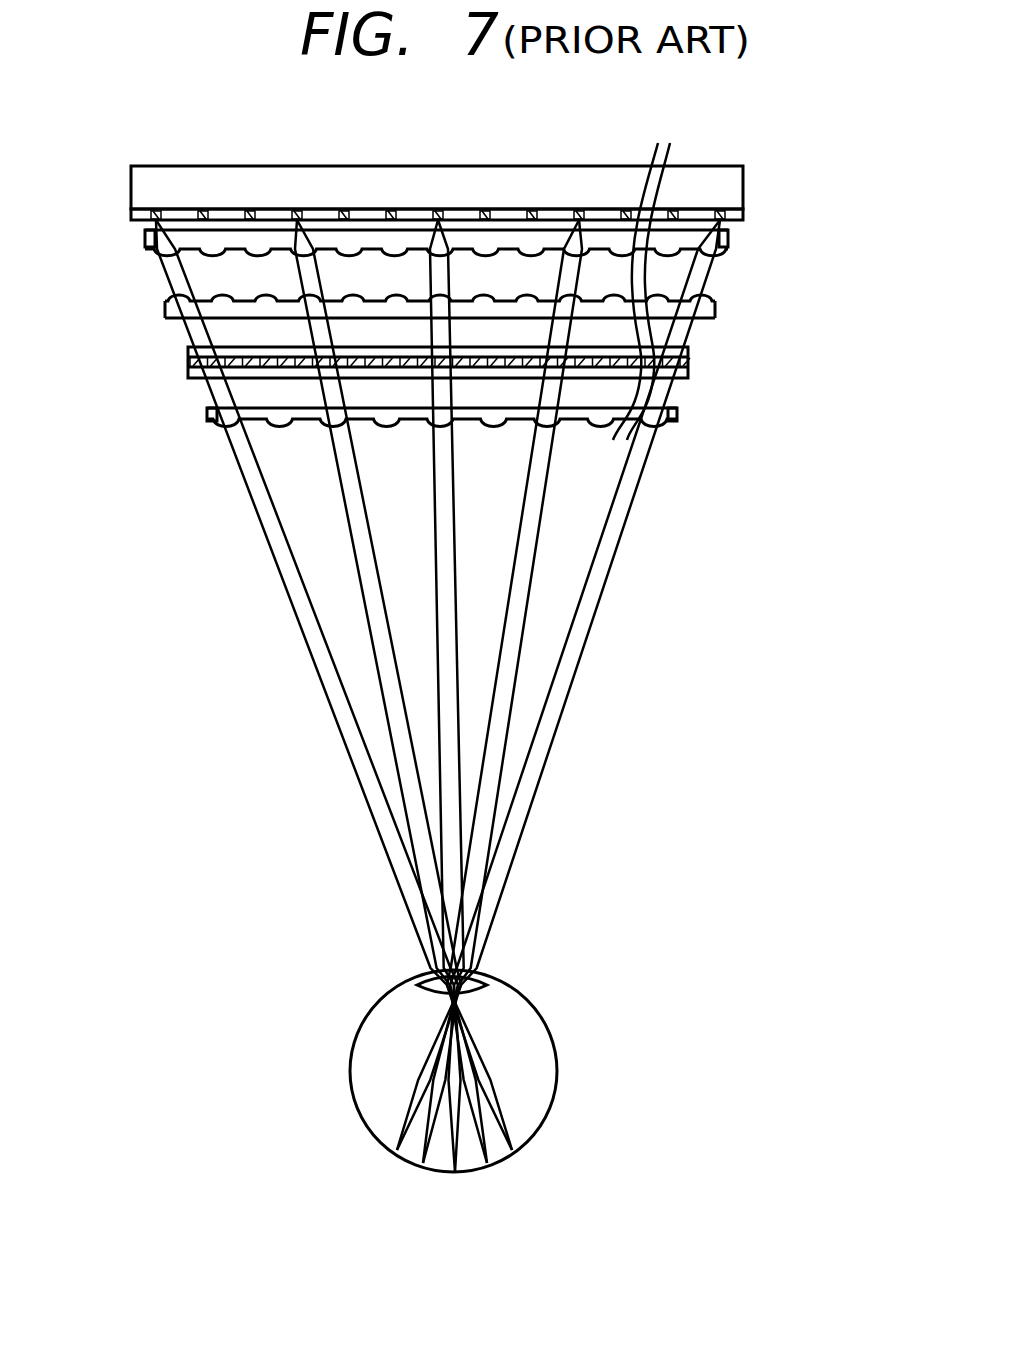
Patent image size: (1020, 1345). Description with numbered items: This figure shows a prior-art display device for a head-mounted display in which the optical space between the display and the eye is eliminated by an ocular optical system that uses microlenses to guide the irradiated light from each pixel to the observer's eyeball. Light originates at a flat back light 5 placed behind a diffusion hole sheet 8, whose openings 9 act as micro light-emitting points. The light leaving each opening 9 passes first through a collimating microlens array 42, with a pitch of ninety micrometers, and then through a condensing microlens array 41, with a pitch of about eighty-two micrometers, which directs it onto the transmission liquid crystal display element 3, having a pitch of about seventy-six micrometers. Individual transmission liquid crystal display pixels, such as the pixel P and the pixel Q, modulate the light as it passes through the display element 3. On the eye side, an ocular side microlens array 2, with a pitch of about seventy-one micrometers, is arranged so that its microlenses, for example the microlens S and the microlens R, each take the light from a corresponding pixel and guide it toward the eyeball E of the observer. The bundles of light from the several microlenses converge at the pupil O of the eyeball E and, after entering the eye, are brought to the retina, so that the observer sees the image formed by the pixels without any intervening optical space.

The flat back light 5 is at (137, 188).
The diffusion hole sheet 8 is at (130, 216).
The opening 9 is at (299, 210).
The collimating microlens array 42 is at (146, 238).
The condensing microlens array 41 is at (165, 316).
The transmission liquid crystal display element 3 is at (188, 350).
The transmission liquid crystal display pixel Q is at (192, 381).
The ocular side microlens array 2 is at (207, 412).
The microlens S is at (232, 436).
The microlens R is at (440, 428).
The transmission liquid crystal display pixel P is at (488, 376).
The pupil O is at (487, 980).
The eyeball E is at (360, 1037).